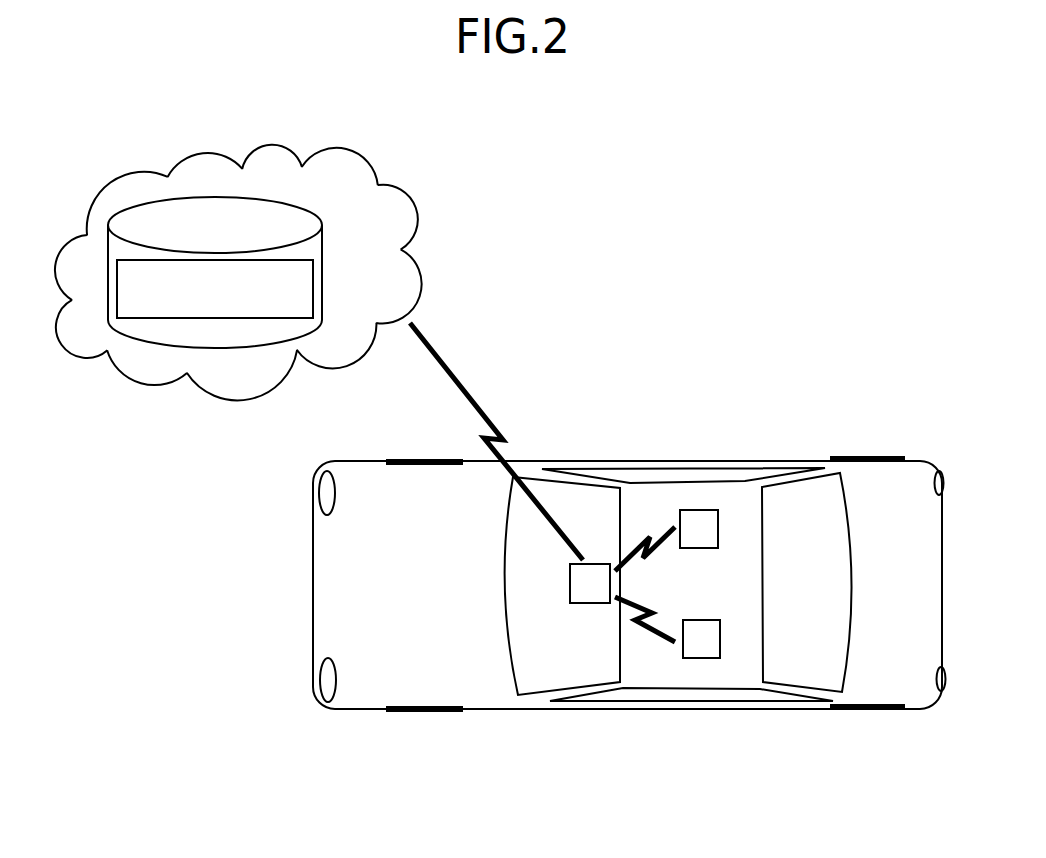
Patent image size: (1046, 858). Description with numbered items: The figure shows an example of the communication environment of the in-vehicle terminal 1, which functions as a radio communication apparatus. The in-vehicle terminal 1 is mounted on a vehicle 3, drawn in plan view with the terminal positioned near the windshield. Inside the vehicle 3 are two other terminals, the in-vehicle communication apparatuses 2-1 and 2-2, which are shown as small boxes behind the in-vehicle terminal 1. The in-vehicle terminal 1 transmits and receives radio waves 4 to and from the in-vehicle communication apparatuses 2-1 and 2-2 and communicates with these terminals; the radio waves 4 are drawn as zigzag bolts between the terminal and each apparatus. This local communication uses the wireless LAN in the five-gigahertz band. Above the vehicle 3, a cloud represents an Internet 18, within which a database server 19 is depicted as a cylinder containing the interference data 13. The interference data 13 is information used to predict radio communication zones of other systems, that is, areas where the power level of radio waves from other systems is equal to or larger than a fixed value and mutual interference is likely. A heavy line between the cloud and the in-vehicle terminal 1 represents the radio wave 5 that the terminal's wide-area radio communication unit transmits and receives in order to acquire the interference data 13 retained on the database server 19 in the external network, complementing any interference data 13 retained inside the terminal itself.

The Internet 18 is at (337, 149).
The database server 19 is at (323, 235).
The interference data 13 is at (313, 282).
The radio wave 5 is at (463, 385).
The vehicle 3 is at (718, 459).
The in-vehicle terminal 1 is at (615, 585).
The in-vehicle communication apparatus 2-1 is at (700, 548).
The in-vehicle communication apparatus 2-2 is at (703, 620).
The radio waves 4 is at (640, 540).